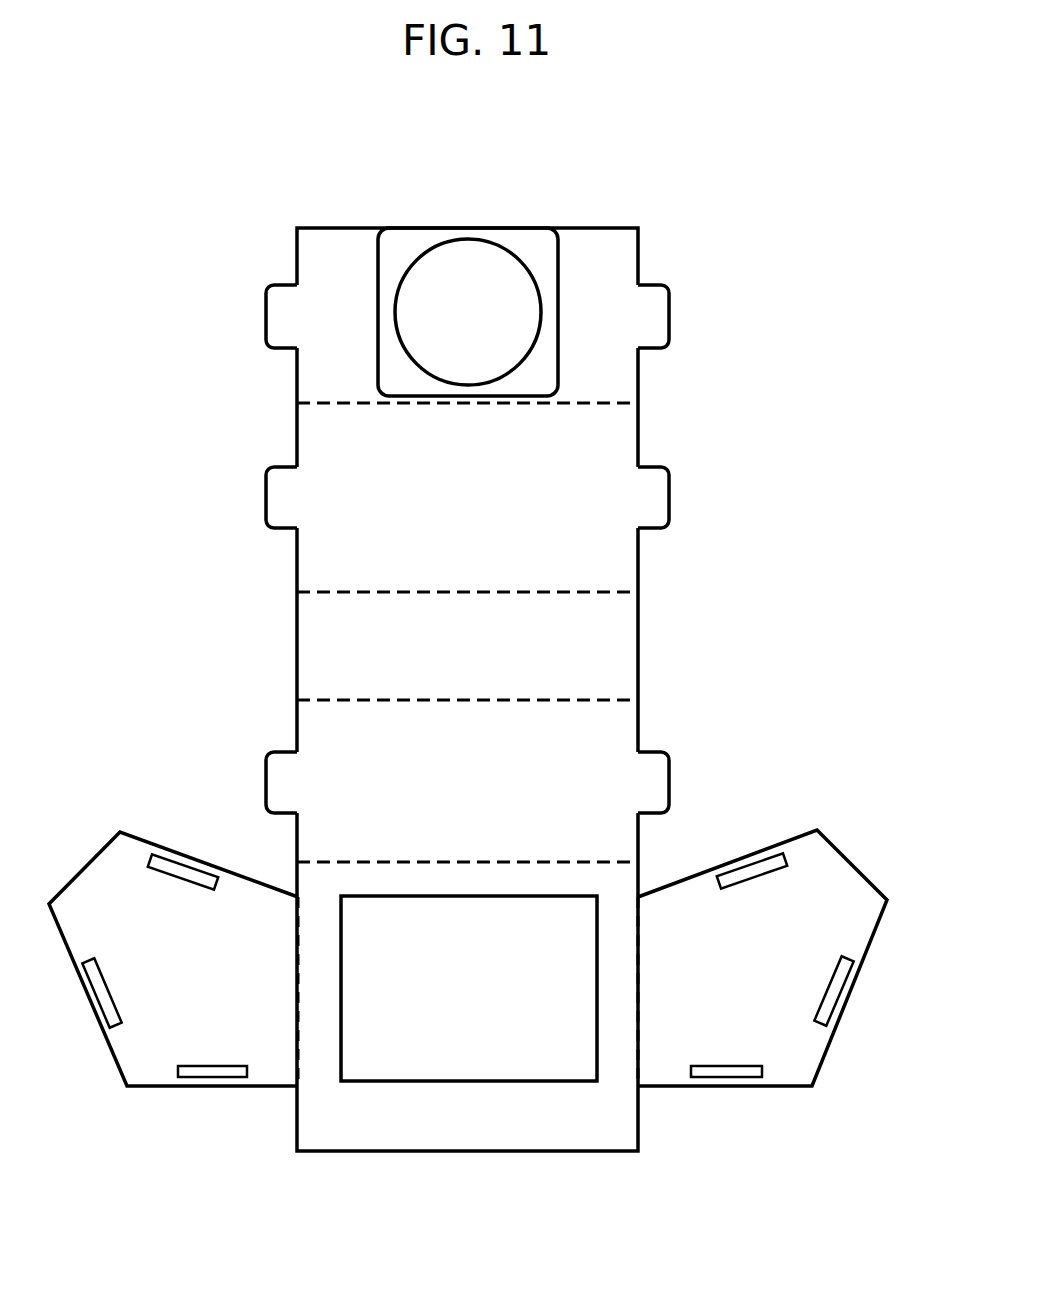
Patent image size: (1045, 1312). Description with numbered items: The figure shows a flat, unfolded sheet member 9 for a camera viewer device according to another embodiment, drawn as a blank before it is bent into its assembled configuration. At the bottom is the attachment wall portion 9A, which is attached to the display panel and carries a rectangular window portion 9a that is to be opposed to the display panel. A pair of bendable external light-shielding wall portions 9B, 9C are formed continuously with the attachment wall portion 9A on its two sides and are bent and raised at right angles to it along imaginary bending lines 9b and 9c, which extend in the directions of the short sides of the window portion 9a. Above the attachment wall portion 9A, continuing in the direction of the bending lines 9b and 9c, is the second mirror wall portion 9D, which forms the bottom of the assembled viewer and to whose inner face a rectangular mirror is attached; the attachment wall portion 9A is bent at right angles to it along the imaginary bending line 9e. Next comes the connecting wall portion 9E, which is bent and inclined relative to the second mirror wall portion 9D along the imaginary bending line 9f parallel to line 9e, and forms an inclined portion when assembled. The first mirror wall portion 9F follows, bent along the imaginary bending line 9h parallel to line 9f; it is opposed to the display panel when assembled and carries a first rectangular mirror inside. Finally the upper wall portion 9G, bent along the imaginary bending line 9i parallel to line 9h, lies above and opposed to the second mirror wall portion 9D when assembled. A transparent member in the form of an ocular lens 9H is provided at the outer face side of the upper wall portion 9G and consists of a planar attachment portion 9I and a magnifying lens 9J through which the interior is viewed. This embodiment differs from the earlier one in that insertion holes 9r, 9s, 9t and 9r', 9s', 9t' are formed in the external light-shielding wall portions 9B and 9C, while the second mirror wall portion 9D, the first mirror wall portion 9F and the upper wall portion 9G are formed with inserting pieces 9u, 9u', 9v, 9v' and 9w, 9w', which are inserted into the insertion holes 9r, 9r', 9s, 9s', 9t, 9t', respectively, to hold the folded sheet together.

The sheet member 9 is at (260, 595).
The attachment wall portion 9A is at (532, 1152).
The external light-shielding wall portion 9B is at (155, 1088).
The external light-shielding wall portion 9C is at (860, 872).
The second mirror wall portion 9D is at (636, 725).
The connecting wall portion 9E is at (636, 648).
The first mirror wall portion 9F is at (305, 435).
The upper wall portion 9G is at (338, 240).
The ocular lens 9H is at (455, 179).
The planar attachment portion 9I is at (522, 240).
The magnifying lens 9J is at (468, 238).
The rectangular window portion 9a is at (466, 1083).
The imaginary bending line 9b is at (295, 1003).
The imaginary bending line 9c is at (642, 998).
The imaginary bending line 9e is at (476, 858).
The imaginary bending line 9f is at (474, 697).
The imaginary bending line 9h is at (474, 588).
The imaginary bending line 9i is at (593, 400).
The insertion hole 9r is at (183, 848).
The insertion hole 9r' is at (752, 846).
The insertion hole 9s is at (81, 997).
The insertion hole 9s' is at (860, 995).
The insertion hole 9t is at (212, 1104).
The insertion hole 9t' is at (726, 1104).
The inserting piece 9u is at (252, 782).
The inserting piece 9u' is at (685, 782).
The inserting piece 9v is at (252, 497).
The inserting piece 9v' is at (685, 497).
The inserting piece 9w is at (251, 316).
The inserting piece 9w' is at (686, 316).